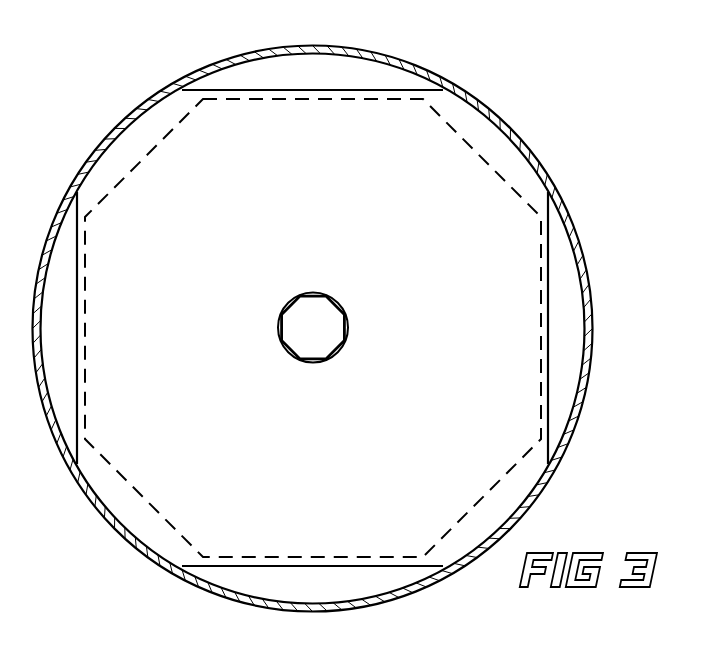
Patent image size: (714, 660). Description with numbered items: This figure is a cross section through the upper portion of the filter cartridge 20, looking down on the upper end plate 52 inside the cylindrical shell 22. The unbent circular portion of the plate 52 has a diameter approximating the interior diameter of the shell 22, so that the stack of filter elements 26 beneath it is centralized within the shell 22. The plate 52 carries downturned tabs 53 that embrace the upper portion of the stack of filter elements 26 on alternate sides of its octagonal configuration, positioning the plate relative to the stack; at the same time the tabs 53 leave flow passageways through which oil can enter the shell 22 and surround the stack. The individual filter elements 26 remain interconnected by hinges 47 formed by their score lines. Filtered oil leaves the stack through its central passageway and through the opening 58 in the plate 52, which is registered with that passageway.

The filter cartridge 20 is at (549, 99).
The shell 22 is at (577, 230).
The stack of filter elements 26 is at (535, 148).
The hinges 47 is at (285, 327).
The plate 52 is at (478, 102).
The downturned tabs 53 is at (395, 90).
The opening 58 is at (338, 343).